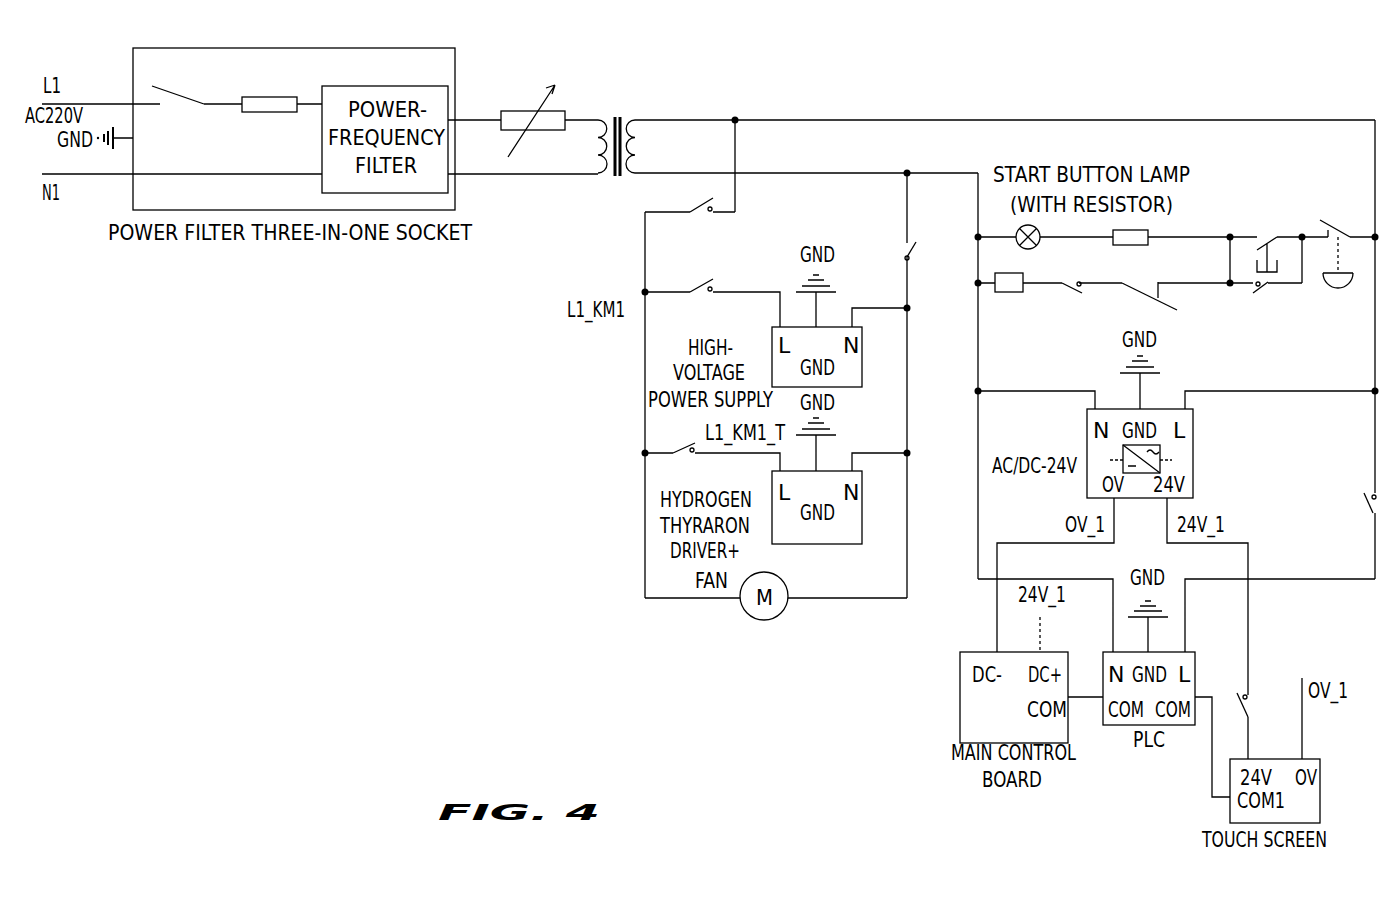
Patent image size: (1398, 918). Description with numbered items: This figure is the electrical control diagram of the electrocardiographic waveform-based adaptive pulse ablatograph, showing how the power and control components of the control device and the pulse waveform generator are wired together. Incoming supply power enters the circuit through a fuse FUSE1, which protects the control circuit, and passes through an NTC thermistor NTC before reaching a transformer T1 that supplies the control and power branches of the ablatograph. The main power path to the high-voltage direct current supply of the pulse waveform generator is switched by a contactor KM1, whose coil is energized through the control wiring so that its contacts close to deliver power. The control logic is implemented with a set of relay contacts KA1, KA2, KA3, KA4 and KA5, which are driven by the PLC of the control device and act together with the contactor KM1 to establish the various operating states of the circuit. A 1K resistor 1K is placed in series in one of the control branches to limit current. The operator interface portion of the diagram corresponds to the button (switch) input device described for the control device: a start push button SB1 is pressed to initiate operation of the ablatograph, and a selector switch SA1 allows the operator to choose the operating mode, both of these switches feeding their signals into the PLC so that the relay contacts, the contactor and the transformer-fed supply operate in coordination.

The fuse FUSE1 is at (269, 119).
The NTC thermistor NTC is at (537, 104).
The transformer T1 is at (624, 147).
The contactor KM1 contacts and coil KM1 is at (969, 260).
The relay contact KA2 is at (712, 303).
The relay contact KA3 is at (712, 463).
The relay contact KA1 is at (1137, 303).
The relay contact KA4 is at (1354, 515).
The relay contact KA5 is at (1167, 500).
The 1K resistor 1K is at (1130, 250).
The start push button SB1 is at (1265, 233).
The selector switch SA1 is at (1340, 269).